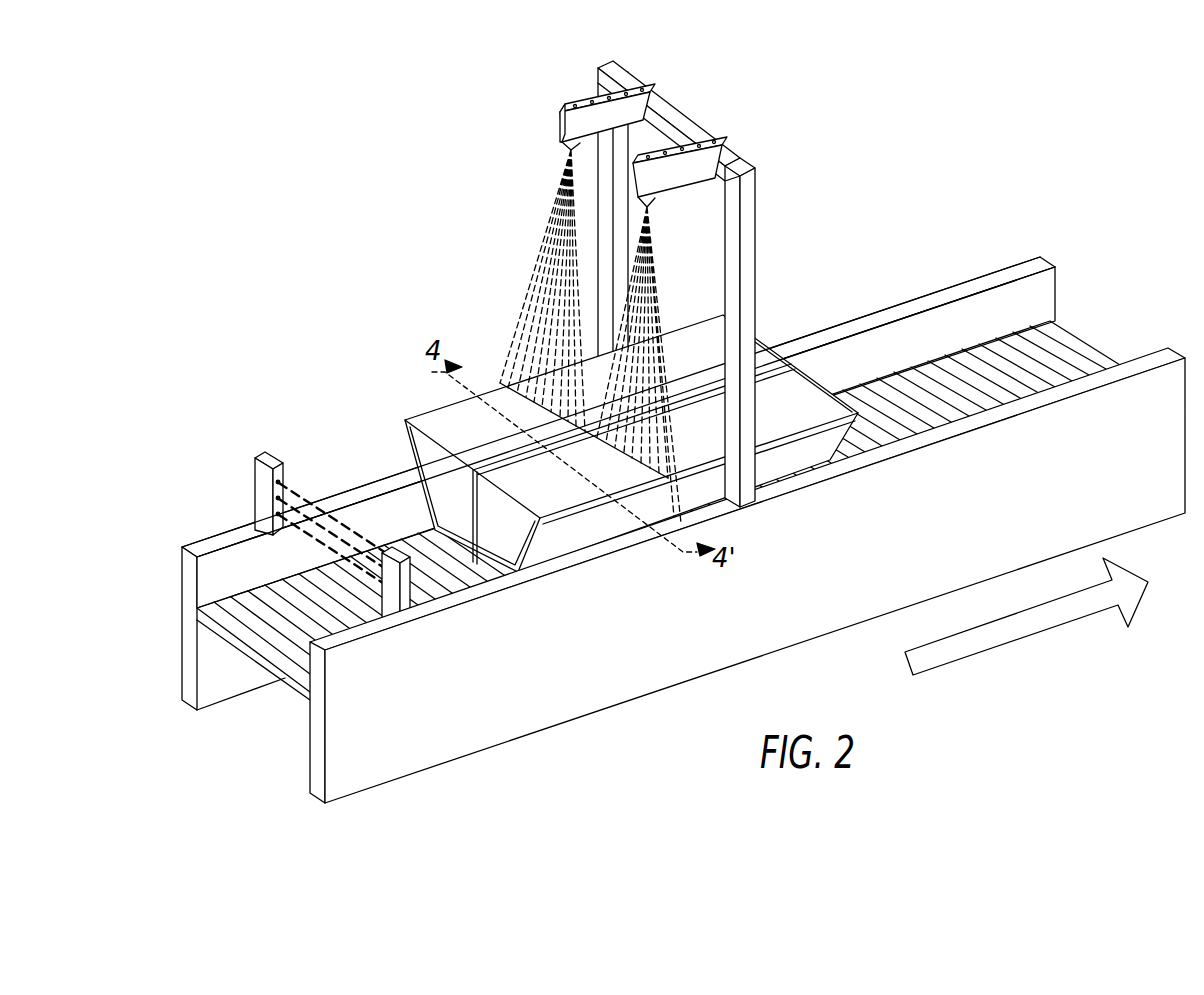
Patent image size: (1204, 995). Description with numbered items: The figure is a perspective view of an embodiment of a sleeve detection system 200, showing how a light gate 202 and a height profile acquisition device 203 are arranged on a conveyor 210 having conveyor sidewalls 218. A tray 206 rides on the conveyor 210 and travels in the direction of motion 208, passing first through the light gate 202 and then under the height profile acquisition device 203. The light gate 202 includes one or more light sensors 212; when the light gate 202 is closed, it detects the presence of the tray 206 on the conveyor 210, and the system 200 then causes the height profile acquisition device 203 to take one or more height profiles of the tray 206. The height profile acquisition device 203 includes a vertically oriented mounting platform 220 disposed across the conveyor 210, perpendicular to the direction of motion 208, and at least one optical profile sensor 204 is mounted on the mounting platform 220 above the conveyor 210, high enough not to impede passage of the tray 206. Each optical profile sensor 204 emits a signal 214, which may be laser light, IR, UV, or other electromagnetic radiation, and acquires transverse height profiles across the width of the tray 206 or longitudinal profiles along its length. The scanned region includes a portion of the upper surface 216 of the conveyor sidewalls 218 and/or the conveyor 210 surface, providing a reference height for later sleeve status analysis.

The sleeve detection system 200 is at (259, 213).
The light gate 202 is at (283, 496).
The height profile acquisition device 203 is at (750, 128).
The optical profile sensor 204 is at (608, 122).
The tray 206 is at (438, 475).
The direction of motion 208 is at (1010, 645).
The conveyor 210 is at (1083, 347).
The light sensors 212 is at (275, 515).
The signal 214 is at (537, 283).
The upper surface 216 is at (838, 338).
The conveyor sidewalls 218 is at (970, 282).
The mounting platform 220 is at (760, 182).